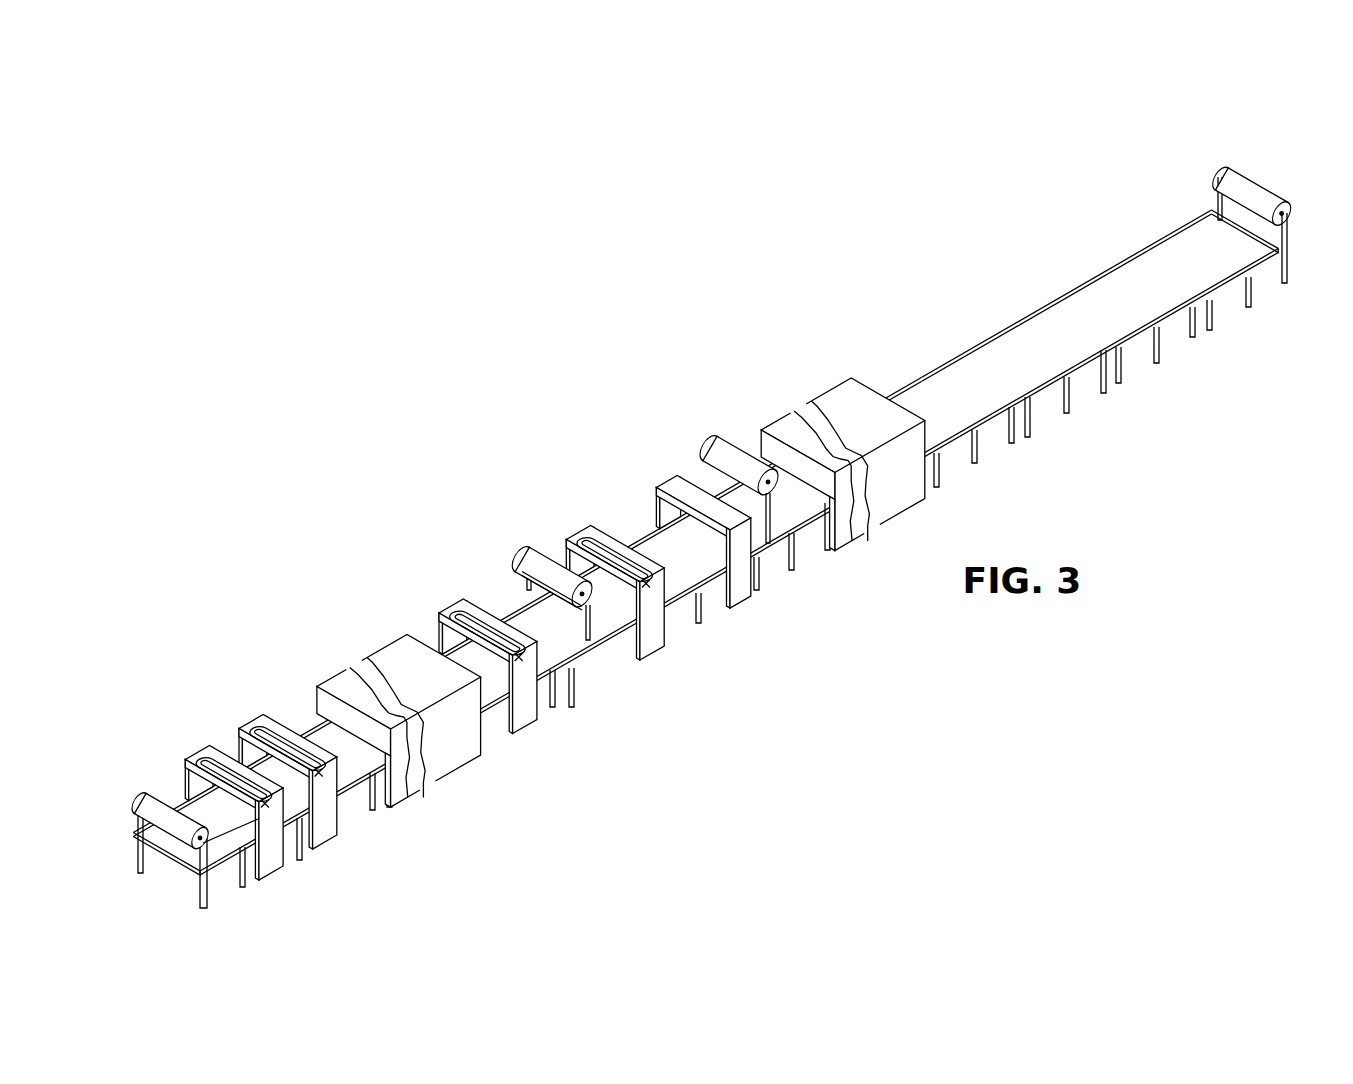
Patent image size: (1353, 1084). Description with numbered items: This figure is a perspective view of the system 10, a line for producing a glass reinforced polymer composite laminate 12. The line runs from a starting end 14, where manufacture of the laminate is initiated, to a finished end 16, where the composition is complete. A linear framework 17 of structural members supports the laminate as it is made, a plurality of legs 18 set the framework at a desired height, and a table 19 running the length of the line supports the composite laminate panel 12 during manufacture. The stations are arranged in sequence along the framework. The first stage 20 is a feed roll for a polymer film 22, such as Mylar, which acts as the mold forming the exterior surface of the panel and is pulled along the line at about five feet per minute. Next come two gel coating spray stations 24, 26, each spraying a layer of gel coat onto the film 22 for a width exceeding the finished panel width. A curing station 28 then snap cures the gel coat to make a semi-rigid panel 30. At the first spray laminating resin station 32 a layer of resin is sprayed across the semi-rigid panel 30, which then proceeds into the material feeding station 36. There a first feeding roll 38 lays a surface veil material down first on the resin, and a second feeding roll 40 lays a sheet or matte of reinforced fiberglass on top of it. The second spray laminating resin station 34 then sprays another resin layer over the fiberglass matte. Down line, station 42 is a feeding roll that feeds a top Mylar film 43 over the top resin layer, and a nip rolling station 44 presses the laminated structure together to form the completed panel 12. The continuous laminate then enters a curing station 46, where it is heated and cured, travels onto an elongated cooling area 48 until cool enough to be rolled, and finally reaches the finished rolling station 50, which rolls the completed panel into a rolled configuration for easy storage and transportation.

The system 10 is at (765, 215).
The glass reinforced polymer composite laminate 12 is at (1016, 353).
The starting end 14 is at (159, 820).
The finished end 16 is at (1237, 178).
The linear framework 17 is at (684, 604).
The legs 18 is at (298, 862).
The table 19 is at (183, 857).
The feed roll station 20 is at (171, 779).
The polymer film 22 is at (170, 800).
The gel coating spray station 24 is at (190, 752).
The gel coating spray station 26 is at (245, 733).
The curing station 28 is at (338, 670).
The semi-rigid panel 30 is at (503, 738).
The spray laminating resin station 32 is at (447, 598).
The spray laminating resin station 34 is at (567, 504).
The material feeding station 36 is at (551, 599).
The first feeding roll 38 is at (572, 612).
The second feeding roll 40 is at (545, 568).
The feeding roll station 42 is at (691, 472).
The top Mylar film 43 is at (707, 478).
The nip rolling station 44 is at (660, 470).
The curing station 46 is at (840, 376).
The cooling area 48 is at (923, 343).
The finished rolling station 50 is at (1258, 165).